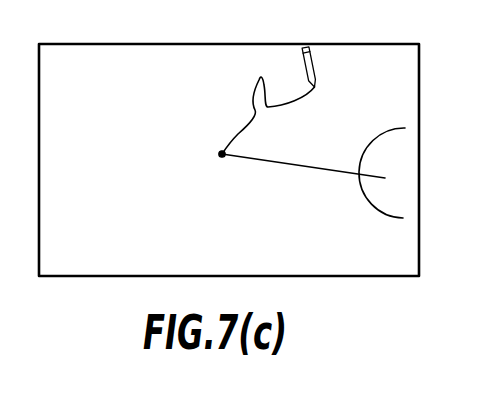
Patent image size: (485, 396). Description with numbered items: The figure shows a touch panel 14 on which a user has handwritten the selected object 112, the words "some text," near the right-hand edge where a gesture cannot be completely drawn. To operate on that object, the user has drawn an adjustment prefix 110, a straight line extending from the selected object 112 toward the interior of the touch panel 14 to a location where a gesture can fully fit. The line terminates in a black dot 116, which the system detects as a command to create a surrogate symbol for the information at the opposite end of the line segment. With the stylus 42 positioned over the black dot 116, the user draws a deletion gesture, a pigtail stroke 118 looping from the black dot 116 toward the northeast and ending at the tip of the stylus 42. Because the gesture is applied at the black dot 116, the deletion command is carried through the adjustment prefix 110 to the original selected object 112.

The touch panel 14 is at (421, 90).
The stylus 42 is at (318, 63).
The adjustment prefix 110 is at (312, 170).
The selected object 112 is at (372, 137).
The black dot 116 is at (223, 158).
The loop stroke 118 is at (250, 132).